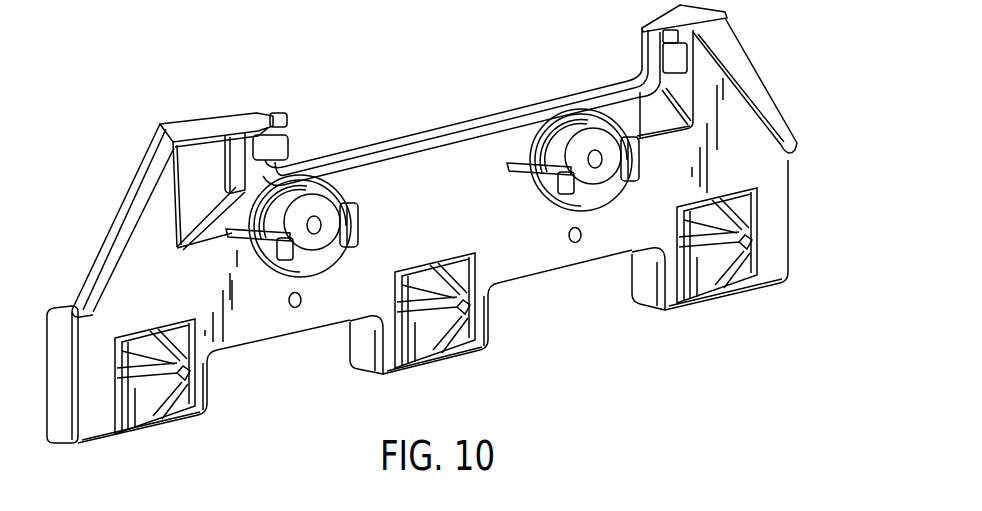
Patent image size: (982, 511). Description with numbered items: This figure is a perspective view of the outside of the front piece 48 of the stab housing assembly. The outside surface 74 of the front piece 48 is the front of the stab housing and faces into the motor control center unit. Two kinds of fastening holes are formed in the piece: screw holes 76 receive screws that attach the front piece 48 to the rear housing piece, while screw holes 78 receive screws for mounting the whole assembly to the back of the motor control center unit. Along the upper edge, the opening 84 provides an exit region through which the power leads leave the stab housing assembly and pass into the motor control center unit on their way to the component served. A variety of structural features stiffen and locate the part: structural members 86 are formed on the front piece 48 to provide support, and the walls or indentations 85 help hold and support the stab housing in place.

The front piece 48 is at (791, 92).
The outside surface 74 is at (446, 235).
The screw holes 76 is at (297, 308).
The screw holes 78 is at (315, 221).
The opening 84 is at (457, 98).
The walls or indentations 85 is at (122, 405).
The structural members 86 is at (151, 393).